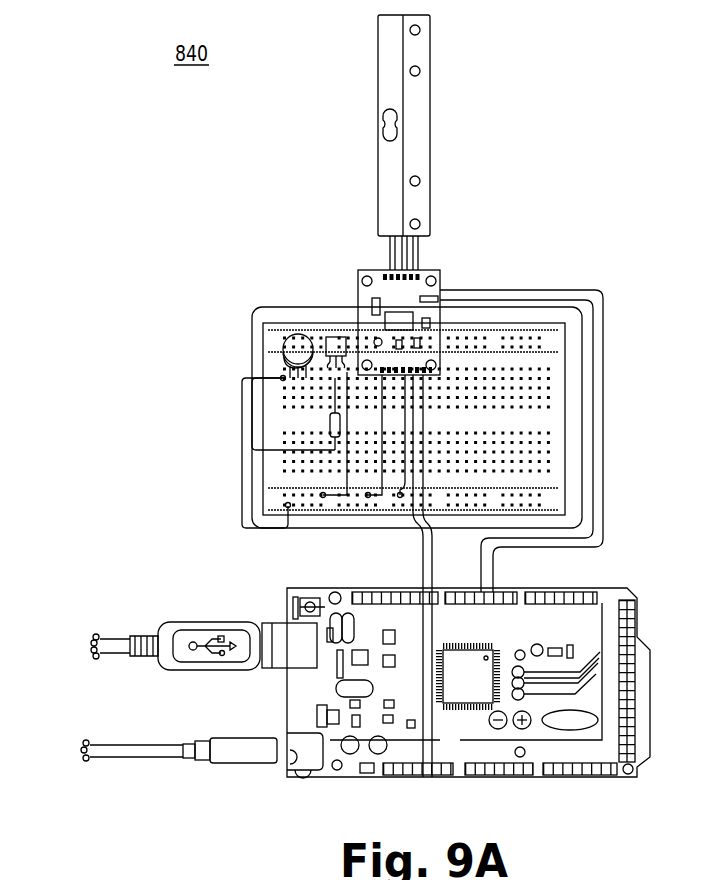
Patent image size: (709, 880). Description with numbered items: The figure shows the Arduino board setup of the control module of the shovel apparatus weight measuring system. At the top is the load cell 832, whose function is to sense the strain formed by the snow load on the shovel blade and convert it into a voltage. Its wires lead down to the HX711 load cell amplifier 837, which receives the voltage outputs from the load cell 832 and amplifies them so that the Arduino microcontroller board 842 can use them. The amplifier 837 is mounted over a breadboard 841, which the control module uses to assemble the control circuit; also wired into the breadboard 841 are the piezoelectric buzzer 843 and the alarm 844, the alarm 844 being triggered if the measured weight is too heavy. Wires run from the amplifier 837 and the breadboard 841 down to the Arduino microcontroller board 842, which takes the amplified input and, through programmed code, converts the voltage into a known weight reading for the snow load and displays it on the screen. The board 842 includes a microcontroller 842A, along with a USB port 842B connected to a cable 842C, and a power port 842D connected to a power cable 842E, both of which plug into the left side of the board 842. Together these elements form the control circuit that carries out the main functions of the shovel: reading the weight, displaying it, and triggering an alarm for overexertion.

The load cell unit 832 is at (431, 103).
The load cell amplifier 837 is at (440, 272).
The breadboard 841 is at (268, 474).
The piezoelectric buzzer 843 is at (283, 345).
The alarm 844 is at (337, 336).
The Arduino microcontroller board 842 is at (596, 778).
The microcontroller 842A is at (464, 705).
The USB port 842B is at (272, 623).
The cable 842C is at (185, 632).
The power port 842D is at (268, 764).
The power cable 842E is at (213, 760).